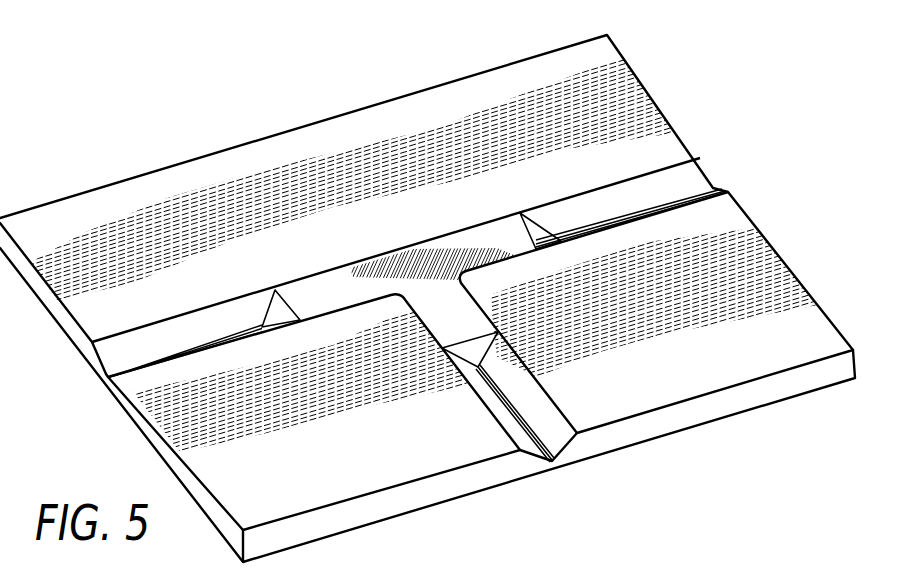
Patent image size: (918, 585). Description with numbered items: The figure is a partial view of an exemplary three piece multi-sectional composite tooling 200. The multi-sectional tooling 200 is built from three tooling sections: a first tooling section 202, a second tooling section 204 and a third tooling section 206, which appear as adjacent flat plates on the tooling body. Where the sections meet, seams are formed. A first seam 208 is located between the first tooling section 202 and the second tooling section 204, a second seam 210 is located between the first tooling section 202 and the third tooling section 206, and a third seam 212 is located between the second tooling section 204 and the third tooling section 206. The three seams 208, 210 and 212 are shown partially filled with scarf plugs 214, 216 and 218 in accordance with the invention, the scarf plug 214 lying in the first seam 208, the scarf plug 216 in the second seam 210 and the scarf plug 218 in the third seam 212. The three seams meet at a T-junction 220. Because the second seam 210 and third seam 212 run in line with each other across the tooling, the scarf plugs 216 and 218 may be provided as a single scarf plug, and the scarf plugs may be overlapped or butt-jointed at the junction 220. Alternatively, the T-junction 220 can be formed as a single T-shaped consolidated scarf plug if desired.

The multi-sectional composite tooling 200 is at (427, 298).
The first tooling section 202 is at (680, 252).
The second tooling section 204 is at (175, 408).
The third tooling section 206 is at (267, 150).
The first seam 208 is at (530, 415).
The second seam 210 is at (633, 197).
The third seam 212 is at (120, 350).
The scarf plug 214 is at (455, 312).
The scarf plug 216 is at (488, 238).
The scarf plug 218 is at (300, 297).
The T-junction 220 is at (410, 247).